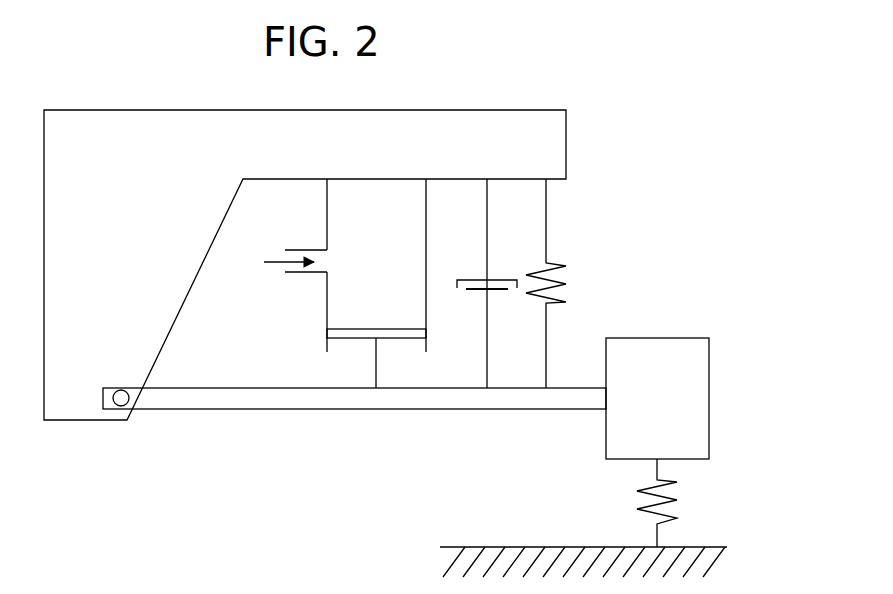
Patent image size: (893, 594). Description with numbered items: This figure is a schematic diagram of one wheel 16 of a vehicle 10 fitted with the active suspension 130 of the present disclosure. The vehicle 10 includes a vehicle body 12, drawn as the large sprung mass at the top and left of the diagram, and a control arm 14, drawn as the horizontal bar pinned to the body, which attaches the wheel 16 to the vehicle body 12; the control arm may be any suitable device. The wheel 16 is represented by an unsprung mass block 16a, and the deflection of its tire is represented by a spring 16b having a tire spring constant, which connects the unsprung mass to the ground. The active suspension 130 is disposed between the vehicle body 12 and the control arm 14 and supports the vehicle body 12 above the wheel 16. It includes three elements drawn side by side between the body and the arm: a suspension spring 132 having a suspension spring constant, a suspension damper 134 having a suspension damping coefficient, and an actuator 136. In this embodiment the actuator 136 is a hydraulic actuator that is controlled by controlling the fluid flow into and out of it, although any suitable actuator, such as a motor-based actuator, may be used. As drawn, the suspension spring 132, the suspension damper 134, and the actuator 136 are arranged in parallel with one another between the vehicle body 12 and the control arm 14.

The vehicle 10 is at (673, 56).
The vehicle body 12 is at (519, 110).
The control arm 14 is at (247, 409).
The wheel 16 is at (763, 325).
The unsprung mass 16a is at (709, 430).
The spring 16b is at (640, 490).
The active suspension 130 is at (622, 268).
The suspension spring 132 is at (546, 232).
The suspension damper 134 is at (487, 348).
The actuator 136 is at (327, 304).